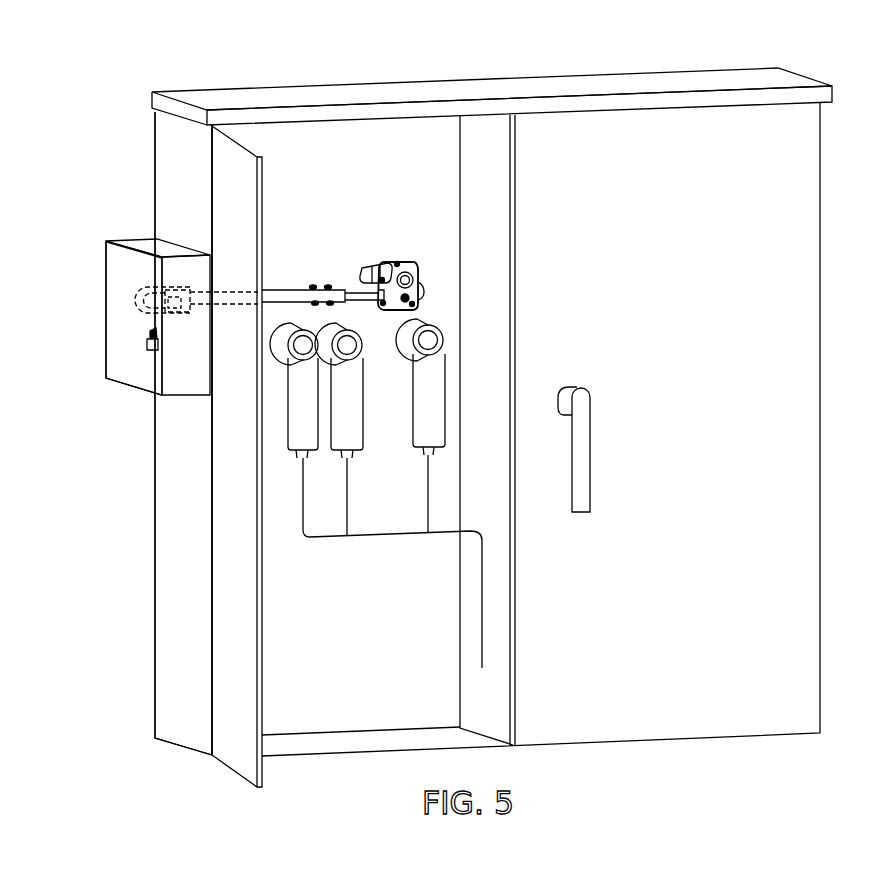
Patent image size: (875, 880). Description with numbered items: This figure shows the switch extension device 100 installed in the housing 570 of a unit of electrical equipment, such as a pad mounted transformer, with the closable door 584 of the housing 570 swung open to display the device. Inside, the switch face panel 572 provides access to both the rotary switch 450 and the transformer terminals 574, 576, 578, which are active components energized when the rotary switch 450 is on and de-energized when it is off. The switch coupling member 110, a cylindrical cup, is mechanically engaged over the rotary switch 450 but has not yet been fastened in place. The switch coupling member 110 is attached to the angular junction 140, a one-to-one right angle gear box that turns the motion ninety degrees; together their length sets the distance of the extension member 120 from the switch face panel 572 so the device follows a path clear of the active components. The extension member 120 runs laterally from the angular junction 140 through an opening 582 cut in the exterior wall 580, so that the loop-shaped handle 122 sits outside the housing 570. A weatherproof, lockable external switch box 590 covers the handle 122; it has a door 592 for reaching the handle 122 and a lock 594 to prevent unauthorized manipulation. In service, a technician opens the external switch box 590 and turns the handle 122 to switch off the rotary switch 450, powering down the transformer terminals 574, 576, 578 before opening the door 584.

The housing 570 is at (806, 78).
The switch face panel 572 is at (372, 135).
The exterior wall 580 is at (167, 163).
The closable door 584 is at (237, 756).
The external switch box 590 is at (118, 240).
The door 592 is at (138, 373).
The lock 594 is at (147, 345).
The handle 122 is at (146, 284).
The opening 582 is at (183, 293).
The extension member 120 is at (275, 287).
The switch extension device 100 is at (303, 303).
The rotary switch 450 is at (360, 278).
The switch coupling member 110 is at (377, 265).
The angular junction 140 is at (422, 292).
The transformer terminal 574 is at (295, 452).
The transformer terminal 576 is at (355, 452).
The transformer terminal 578 is at (422, 450).